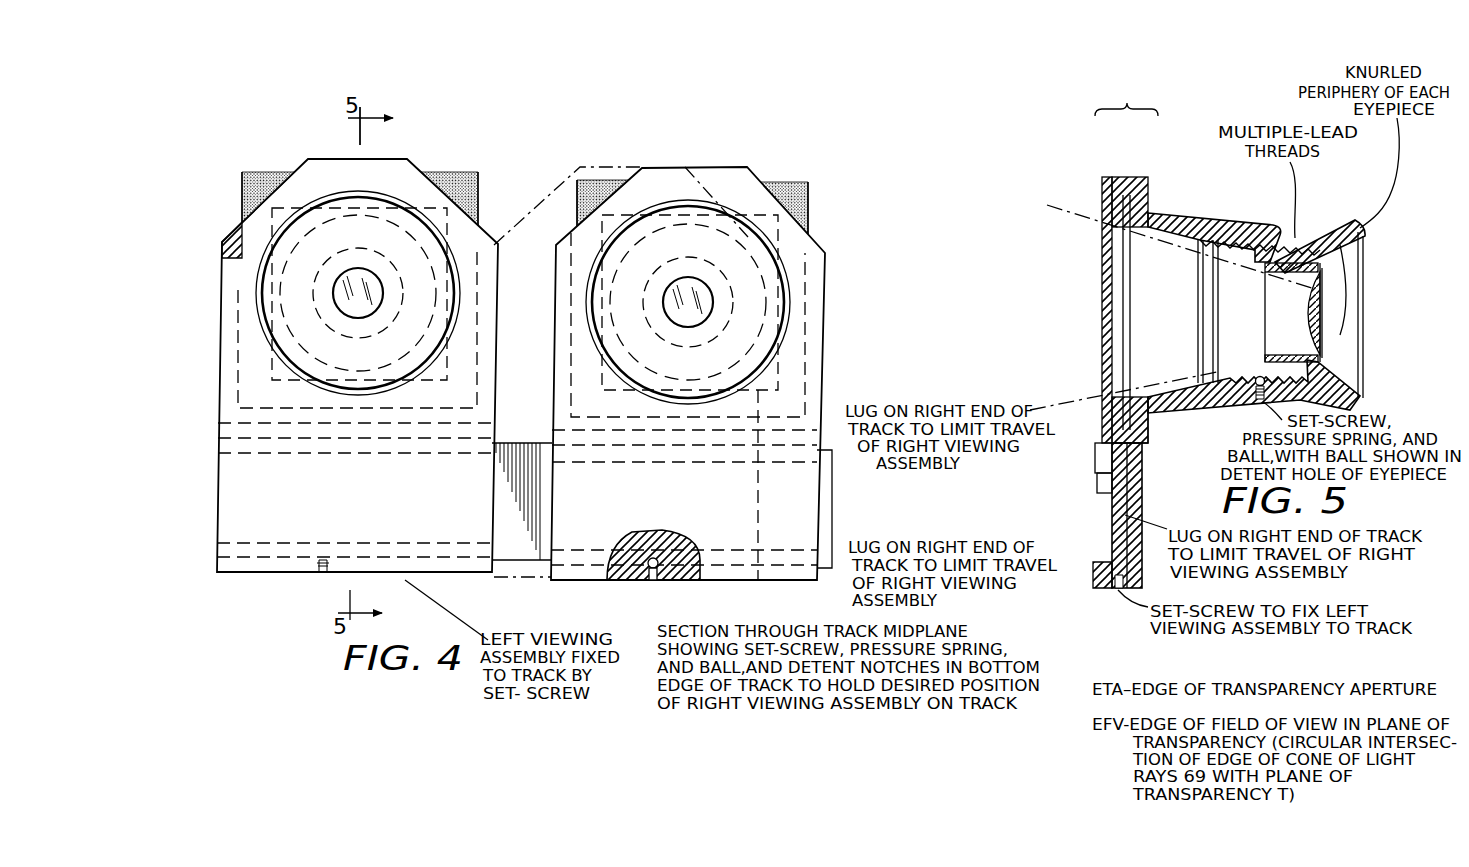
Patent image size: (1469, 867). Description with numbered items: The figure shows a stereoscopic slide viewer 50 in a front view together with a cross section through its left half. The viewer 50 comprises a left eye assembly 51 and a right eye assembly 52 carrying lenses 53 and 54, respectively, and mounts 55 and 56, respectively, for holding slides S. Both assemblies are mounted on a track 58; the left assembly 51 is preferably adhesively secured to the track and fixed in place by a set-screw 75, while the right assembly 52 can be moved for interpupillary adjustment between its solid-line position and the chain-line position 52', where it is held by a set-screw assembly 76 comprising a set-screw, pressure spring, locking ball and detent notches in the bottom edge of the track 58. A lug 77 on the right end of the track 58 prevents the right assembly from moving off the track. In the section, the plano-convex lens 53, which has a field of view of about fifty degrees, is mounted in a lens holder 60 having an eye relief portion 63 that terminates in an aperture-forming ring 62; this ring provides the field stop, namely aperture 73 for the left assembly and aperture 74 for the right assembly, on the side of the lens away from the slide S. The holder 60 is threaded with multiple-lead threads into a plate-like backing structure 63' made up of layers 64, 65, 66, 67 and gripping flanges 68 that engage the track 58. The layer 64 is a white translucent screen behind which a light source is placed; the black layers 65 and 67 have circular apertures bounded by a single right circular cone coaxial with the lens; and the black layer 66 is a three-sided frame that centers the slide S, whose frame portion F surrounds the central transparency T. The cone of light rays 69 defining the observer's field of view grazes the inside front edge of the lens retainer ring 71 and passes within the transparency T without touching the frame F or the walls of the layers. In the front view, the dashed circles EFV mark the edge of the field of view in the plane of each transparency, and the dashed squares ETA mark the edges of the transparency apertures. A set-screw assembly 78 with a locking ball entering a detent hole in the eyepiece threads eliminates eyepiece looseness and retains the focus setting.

In FIG. 4, the viewer 50 is at (248, 610).
In FIG. 4, the left eye assembly 51 is at (403, 196).
In FIG. 5, the left eye assembly 51 is at (1314, 223).
In FIG. 4, the right eye assembly 52 is at (698, 238).
In FIG. 4, the right eye assembly in moved position 52' is at (621, 196).
In FIG. 4, the lens 53 is at (373, 288).
In FIG. 5, the lens 53 is at (1318, 305).
In FIG. 4, the lens 54 is at (694, 297).
In FIG. 4, the mount 55 is at (216, 278).
In FIG. 4, the mount 56 is at (838, 306).
In FIG. 4, the track 58 is at (532, 562).
In FIG. 5, the track 58 is at (1110, 515).
In FIG. 5, the lens holder 60 is at (1338, 215).
In FIG. 5, the aperture-forming ring 62 is at (1328, 272).
In FIG. 5, the eye relief portion 63 is at (1401, 309).
In FIG. 5, the plate-like backing structure 63' is at (1126, 99).
In FIG. 5, the layer 64 is at (1100, 200).
In FIG. 5, the layer 65 is at (1113, 177).
In FIG. 4, the layer 66 is at (248, 356).
In FIG. 5, the layer 66 is at (1143, 428).
In FIG. 5, the layer 67 is at (1140, 470).
In FIG. 5, the gripping flanges 68 is at (1097, 463).
In FIG. 5, the cone of light rays 69 is at (1067, 212).
In FIG. 5, the lens retainer ring 71 is at (1278, 295).
In FIG. 4, the aperture 73 is at (342, 272).
In FIG. 5, the aperture 73 is at (1322, 327).
In FIG. 4, the aperture 74 is at (693, 292).
In FIG. 4, the set-screw 75 is at (323, 574).
In FIG. 5, the set-screw 75 is at (1117, 590).
In FIG. 4, the set-screw assembly 76 is at (653, 583).
In FIG. 4, the lug 77 is at (857, 500).
In FIG. 5, the lug 77 is at (970, 537).
In FIG. 5, the set-screw assembly 78 is at (1262, 401).
In FIG. 4, the slide S is at (468, 183).
In FIG. 5, the slide S is at (1128, 200).
In FIG. 5, the frame portion F is at (1133, 200).
In FIG. 5, the transparency T is at (1128, 283).
In FIG. 4, the edge of transparency aperture ETA is at (291, 170).
In FIG. 4, the edge of field of view EFV is at (521, 363).